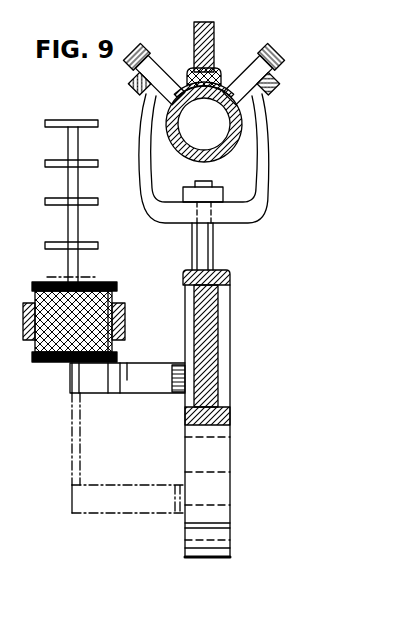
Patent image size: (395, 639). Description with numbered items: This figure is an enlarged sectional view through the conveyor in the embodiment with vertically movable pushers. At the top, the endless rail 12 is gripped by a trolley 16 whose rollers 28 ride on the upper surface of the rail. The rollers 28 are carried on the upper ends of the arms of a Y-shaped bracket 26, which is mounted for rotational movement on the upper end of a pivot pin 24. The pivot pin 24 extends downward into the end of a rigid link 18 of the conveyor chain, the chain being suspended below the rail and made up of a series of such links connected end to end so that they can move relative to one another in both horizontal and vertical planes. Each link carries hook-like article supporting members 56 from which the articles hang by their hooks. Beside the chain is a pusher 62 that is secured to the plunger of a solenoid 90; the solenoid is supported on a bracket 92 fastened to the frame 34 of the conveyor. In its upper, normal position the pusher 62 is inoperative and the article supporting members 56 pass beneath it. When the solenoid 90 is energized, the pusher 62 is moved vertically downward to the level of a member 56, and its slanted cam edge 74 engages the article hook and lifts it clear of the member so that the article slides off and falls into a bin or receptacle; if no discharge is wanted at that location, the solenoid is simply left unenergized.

The endless rail 12 is at (242, 117).
The trolley 16 is at (268, 141).
The rigid link 18 is at (229, 331).
The pivot pin 24 is at (207, 252).
The Y-shaped bracket 26 is at (258, 179).
The roller 28 is at (143, 58).
The frame 34 is at (206, 37).
The article supporting member 56 is at (222, 503).
The pusher 62 is at (133, 390).
The slanted cam edge 74 is at (177, 372).
The solenoid 90 is at (113, 283).
The bracket 92 is at (30, 338).